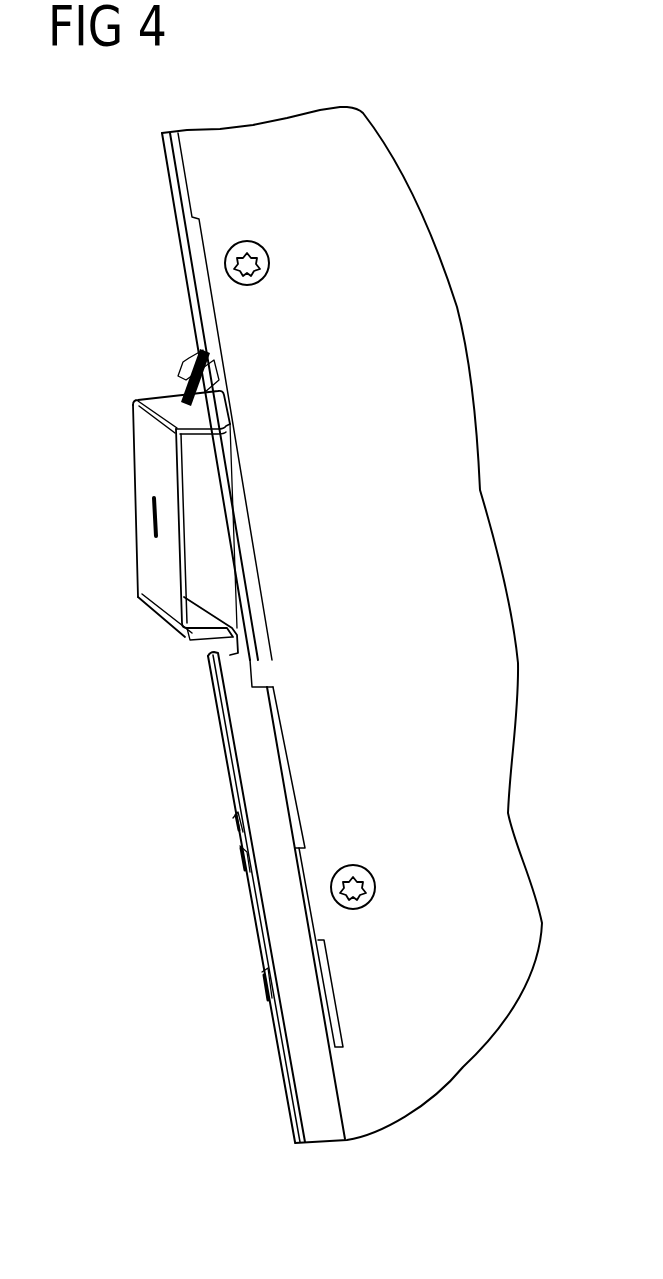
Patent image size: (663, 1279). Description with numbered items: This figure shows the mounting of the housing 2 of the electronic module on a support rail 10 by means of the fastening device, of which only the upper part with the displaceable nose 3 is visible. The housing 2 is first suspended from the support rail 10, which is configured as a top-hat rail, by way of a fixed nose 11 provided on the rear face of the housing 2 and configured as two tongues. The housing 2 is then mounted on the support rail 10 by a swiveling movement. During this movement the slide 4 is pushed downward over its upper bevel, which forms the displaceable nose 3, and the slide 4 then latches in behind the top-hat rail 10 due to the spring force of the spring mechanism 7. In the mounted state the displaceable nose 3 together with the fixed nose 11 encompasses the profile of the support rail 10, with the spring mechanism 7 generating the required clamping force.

The housing 2 is at (240, 318).
The displaceable nose 3 is at (258, 660).
The slide 4 is at (252, 752).
The spring mechanism 7 is at (248, 875).
The support rail 10 is at (147, 570).
The fixed nose 11 is at (183, 377).